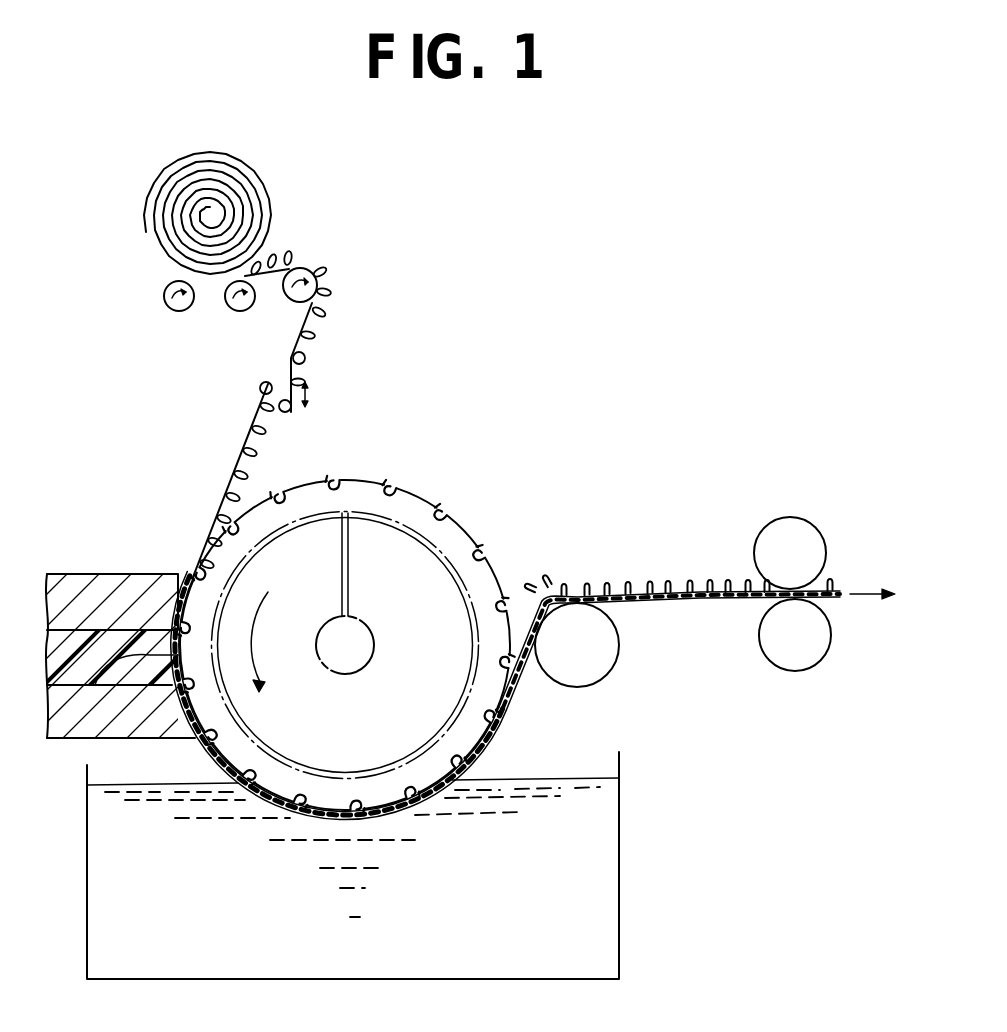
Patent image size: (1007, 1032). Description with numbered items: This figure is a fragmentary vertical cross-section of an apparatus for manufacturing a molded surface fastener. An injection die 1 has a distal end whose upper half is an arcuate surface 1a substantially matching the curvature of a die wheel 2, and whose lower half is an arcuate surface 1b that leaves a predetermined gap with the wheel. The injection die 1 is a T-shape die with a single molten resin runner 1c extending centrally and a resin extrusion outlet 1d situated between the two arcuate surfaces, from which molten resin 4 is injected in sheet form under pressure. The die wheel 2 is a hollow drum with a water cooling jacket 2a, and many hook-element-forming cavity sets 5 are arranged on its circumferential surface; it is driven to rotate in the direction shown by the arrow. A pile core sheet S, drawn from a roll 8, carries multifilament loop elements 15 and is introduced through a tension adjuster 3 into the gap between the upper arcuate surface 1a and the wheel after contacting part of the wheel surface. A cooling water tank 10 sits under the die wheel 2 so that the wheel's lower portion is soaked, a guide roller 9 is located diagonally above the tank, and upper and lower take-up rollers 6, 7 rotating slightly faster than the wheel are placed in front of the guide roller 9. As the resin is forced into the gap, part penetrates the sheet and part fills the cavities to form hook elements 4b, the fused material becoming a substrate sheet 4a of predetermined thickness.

The injection die 1 is at (115, 639).
The upper arcuate surface 1a is at (163, 578).
The lower arcuate surface 1b is at (176, 672).
The molten resin runner 1c is at (95, 738).
The resin extrusion outlet 1d is at (185, 656).
The die wheel 2 is at (363, 628).
The water cooling jacket 2a is at (470, 533).
The tension adjuster 3 is at (308, 375).
The molten resin 4 is at (67, 650).
The substrate sheet 4a is at (667, 601).
The hook elements 4b is at (706, 588).
The hook-element-forming cavity sets 5 is at (397, 480).
The upper take-up roller 6 is at (800, 550).
The lower take-up roller 7 is at (815, 650).
The sheet roll 8 is at (270, 216).
The guide roller 9 is at (600, 670).
The cooling water tank 10 is at (600, 880).
The loop elements 15 is at (243, 436).
The pile core sheet S is at (312, 318).